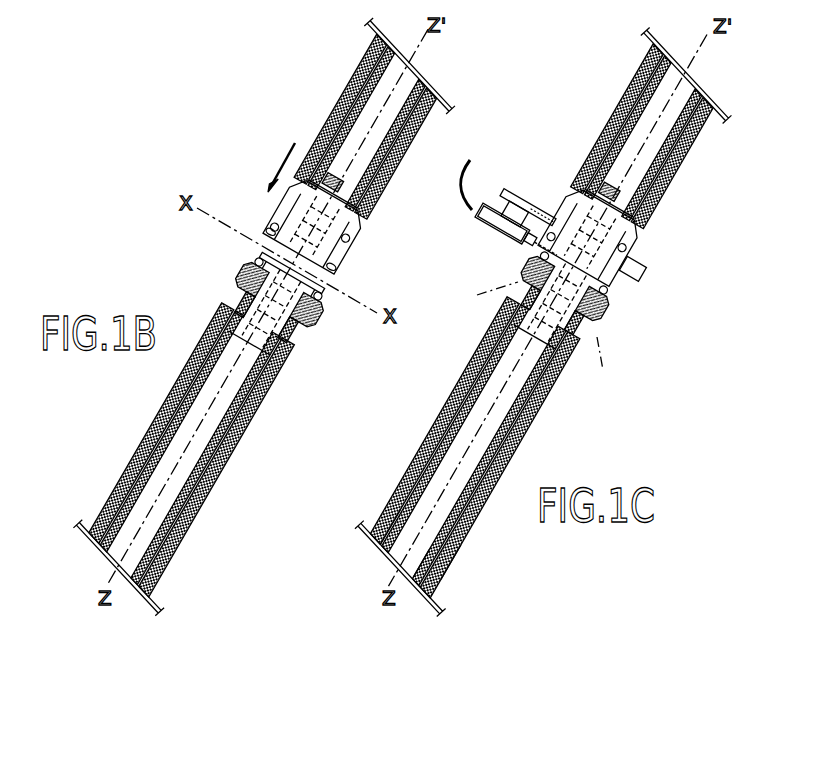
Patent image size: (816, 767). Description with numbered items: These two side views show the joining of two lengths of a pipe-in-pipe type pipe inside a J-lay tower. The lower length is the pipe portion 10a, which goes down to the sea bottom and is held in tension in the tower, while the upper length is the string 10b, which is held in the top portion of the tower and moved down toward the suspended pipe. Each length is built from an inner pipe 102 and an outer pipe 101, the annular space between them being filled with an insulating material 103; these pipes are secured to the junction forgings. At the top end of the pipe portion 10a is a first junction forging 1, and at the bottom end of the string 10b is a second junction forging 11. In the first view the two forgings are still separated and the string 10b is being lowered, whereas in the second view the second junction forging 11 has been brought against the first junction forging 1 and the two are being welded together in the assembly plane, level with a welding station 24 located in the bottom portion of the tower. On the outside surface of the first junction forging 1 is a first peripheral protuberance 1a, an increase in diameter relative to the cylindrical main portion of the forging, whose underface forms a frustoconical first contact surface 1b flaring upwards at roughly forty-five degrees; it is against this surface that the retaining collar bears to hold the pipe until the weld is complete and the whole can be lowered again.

In FIG. 1B, the first junction forging 1 is at (273, 318).
In FIG. 1C, the first junction forging 1 is at (578, 312).
In FIG. 1B, the first peripheral protuberance 1a is at (318, 316).
In FIG. 1C, the first peripheral protuberance 1a is at (602, 316).
In FIG. 1B, the first contact surface of revolution 1b is at (305, 333).
In FIG. 1B, the second junction forging 11 is at (267, 220).
In FIG. 1C, the second junction forging 11 is at (641, 262).
In FIG. 1B, the pipe portion 10a is at (128, 466).
In FIG. 1C, the pipe portion 10a is at (532, 430).
In FIG. 1B, the string 10b is at (337, 127).
In FIG. 1C, the string 10b is at (672, 180).
In FIG. 1C, the welding station 24 is at (493, 237).
In FIG. 1C, the outer pipe 101 is at (455, 560).
In FIG. 1C, the inner pipe 102 is at (437, 558).
In FIG. 1C, the insulating material 103 is at (428, 598).